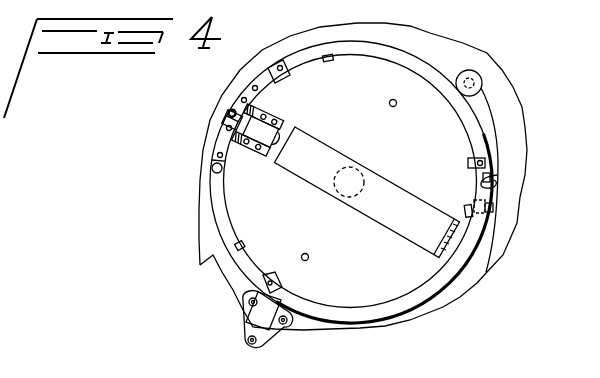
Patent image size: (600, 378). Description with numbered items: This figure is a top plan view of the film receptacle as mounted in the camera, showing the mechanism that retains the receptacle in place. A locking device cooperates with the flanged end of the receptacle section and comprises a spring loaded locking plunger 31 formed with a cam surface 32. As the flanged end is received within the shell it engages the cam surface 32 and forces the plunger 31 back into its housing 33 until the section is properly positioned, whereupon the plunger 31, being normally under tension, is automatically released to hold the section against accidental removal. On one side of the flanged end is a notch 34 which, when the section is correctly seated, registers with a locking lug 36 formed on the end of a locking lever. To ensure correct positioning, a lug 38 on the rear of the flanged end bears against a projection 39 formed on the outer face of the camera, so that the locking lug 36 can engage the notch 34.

The locking plunger 31 is at (283, 285).
The cam surface 32 is at (290, 296).
The housing 33 is at (250, 320).
The notch 34 is at (498, 192).
The locking lug 36 is at (497, 175).
The lug 38 is at (490, 215).
The projection 39 is at (493, 208).